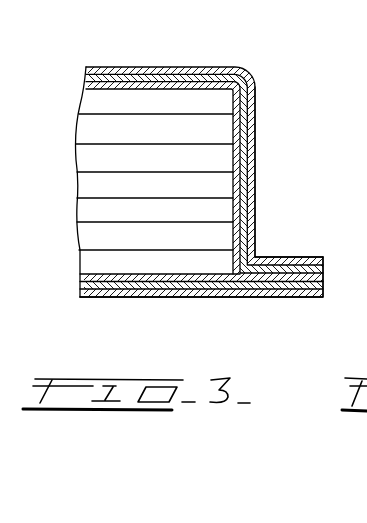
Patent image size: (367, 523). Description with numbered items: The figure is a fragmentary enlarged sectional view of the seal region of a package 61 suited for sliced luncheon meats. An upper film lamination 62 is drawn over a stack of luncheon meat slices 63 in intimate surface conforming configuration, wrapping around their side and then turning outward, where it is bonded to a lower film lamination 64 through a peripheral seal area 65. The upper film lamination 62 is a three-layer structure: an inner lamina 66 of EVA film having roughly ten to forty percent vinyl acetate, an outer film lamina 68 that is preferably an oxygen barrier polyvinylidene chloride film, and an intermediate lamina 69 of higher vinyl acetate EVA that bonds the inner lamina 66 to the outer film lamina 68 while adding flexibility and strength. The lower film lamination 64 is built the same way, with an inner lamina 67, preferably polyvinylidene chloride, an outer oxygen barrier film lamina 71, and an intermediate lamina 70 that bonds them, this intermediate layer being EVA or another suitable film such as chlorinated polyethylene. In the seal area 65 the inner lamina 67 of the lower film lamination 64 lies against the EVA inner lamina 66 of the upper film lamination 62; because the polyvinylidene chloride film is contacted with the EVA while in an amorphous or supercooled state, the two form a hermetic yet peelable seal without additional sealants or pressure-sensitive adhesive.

The package 61 is at (258, 68).
The upper film lamination 62 is at (255, 147).
The luncheon meat slices 63 is at (160, 136).
The lower film lamination 64 is at (322, 298).
The seal area 65 is at (265, 258).
The inner lamina 66 is at (116, 84).
The inner lamina 67 is at (141, 283).
The outer film lamina 68 is at (205, 73).
The intermediate lamina 69 is at (160, 77).
The intermediate lamina 70 is at (236, 285).
The outer oxygen barrier film lamina 71 is at (297, 284).